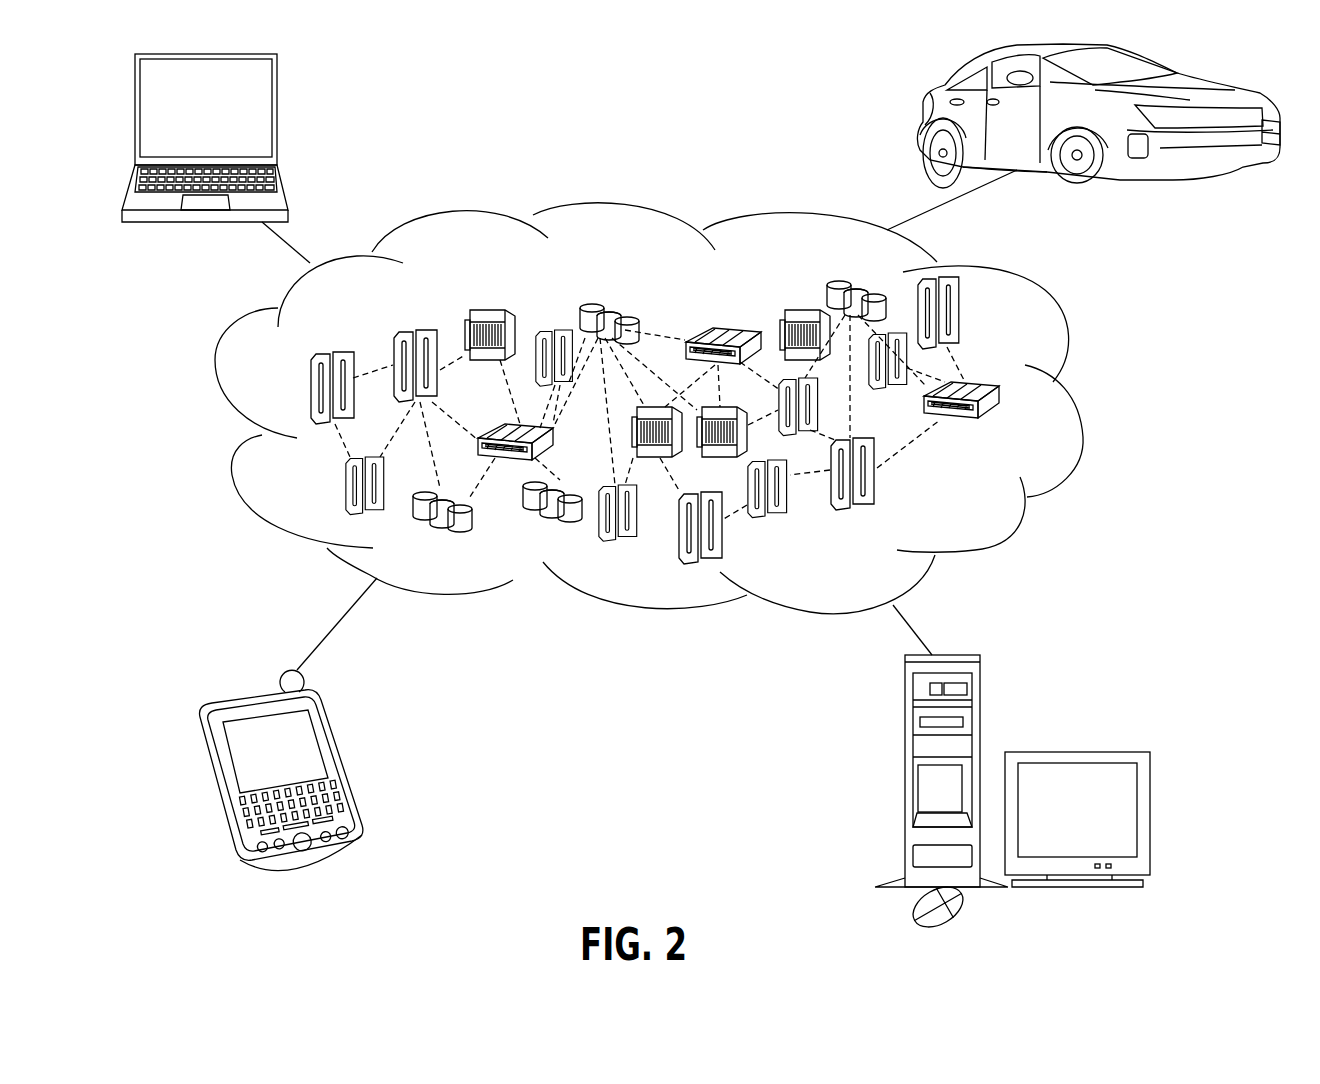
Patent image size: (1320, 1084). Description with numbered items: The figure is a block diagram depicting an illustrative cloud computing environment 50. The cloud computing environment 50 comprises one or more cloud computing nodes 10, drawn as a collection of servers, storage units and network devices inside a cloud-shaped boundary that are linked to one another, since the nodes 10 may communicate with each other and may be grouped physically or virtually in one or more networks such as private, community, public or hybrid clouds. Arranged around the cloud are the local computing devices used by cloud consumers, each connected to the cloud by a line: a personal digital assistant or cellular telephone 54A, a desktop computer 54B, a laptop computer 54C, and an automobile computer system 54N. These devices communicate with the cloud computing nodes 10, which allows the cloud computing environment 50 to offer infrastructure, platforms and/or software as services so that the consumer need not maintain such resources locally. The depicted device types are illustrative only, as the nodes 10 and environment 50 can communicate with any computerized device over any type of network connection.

The cloud computing environment 50 is at (1072, 400).
The cloud computing node 10 is at (986, 506).
The personal digital assistant or cellular telephone 54A is at (340, 732).
The desktop computer 54B is at (905, 716).
The laptop computer 54C is at (277, 93).
The automobile computer system 54N is at (923, 110).